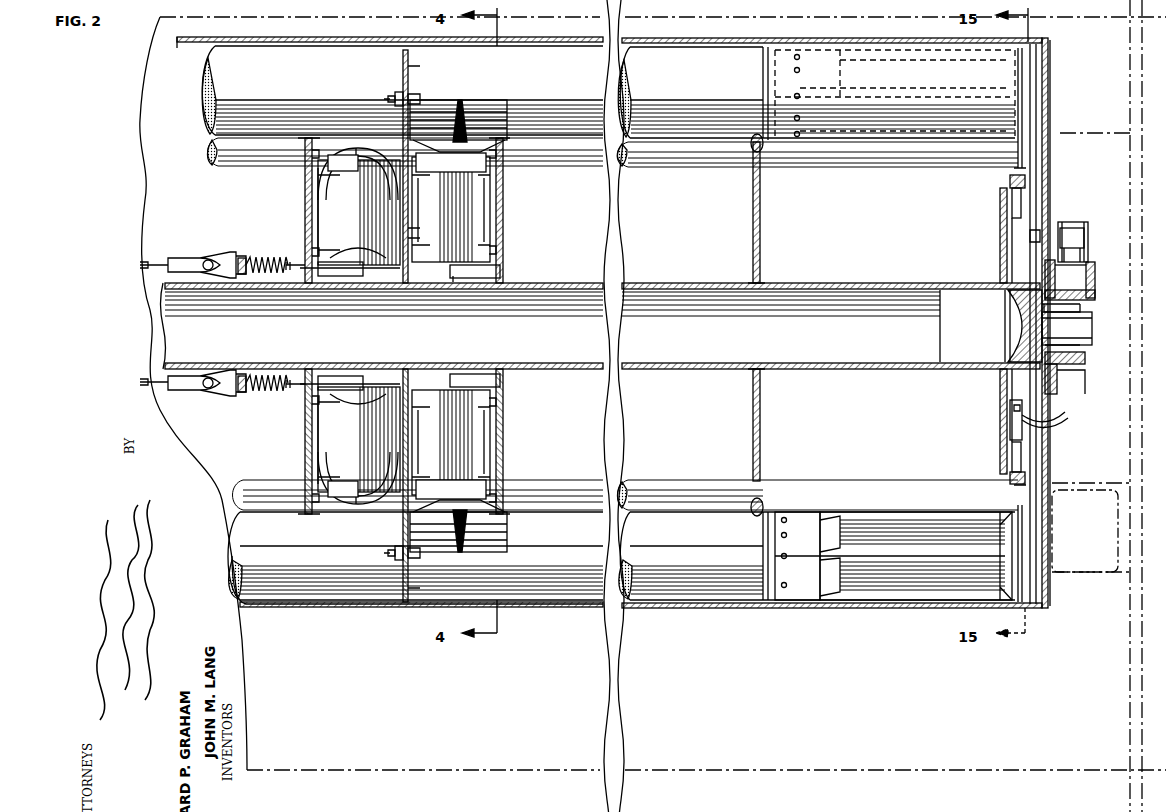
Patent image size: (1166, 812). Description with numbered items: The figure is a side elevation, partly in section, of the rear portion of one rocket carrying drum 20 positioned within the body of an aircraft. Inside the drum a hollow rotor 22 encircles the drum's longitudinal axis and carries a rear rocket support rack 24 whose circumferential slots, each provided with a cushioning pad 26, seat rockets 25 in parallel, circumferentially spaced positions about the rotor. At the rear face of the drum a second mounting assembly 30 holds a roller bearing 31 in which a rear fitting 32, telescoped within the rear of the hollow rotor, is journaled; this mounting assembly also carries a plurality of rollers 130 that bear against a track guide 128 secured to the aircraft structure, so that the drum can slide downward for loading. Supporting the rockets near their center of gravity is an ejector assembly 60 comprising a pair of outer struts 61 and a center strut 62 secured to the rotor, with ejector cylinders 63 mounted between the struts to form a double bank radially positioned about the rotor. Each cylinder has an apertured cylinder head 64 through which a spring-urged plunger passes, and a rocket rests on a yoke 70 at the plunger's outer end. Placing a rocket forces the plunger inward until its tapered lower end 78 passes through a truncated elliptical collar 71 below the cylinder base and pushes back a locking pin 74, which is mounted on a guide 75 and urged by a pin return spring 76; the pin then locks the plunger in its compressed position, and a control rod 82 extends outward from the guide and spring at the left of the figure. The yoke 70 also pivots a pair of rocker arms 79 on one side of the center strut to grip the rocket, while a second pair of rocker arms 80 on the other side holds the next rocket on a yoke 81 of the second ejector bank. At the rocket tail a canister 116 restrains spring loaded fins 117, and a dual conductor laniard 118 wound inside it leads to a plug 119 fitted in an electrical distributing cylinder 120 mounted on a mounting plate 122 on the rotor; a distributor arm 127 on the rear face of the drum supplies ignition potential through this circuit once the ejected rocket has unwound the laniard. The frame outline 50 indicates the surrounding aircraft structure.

The rocket carrying drum 20 is at (700, 45).
The hollow rotor 22 is at (808, 362).
The rear rocket support rack 24 is at (762, 207).
The rocket 25 is at (702, 95).
The pad 26 is at (753, 150).
The second mounting assembly 30 is at (1088, 270).
The roller bearing 31 is at (1085, 308).
The rear fitting 32 is at (1080, 352).
The frame outline 50 is at (375, 770).
The ejector assembly 60 is at (426, 326).
The outer strut 61 is at (304, 180).
The center strut 62 is at (410, 233).
The ejector cylinder 63 is at (330, 208).
The apertured cylinder head 64 is at (332, 172).
The yoke 70 is at (464, 110).
The truncated elliptical collar 71 is at (498, 271).
The locking pin 74 is at (298, 260).
The guide 75 is at (240, 260).
The pin return spring 76 is at (262, 258).
The tapered lower end 78 is at (455, 278).
The rocker arm 79 is at (418, 68).
The second pair of rocker arms 80 is at (400, 68).
The yoke 81 is at (330, 148).
The control rod 82 is at (155, 258).
The canister 116 is at (1035, 64).
The spring loaded fins 117 is at (852, 60).
The dual conductor laniard 118 is at (1025, 150).
The plug 119 is at (1026, 172).
The electrical distributing cylinder 120 is at (1022, 195).
The mounting plate 122 is at (1000, 237).
The distributor arm 127 is at (1040, 438).
The track guide 128 is at (1085, 531).
The roller 130 is at (1068, 228).